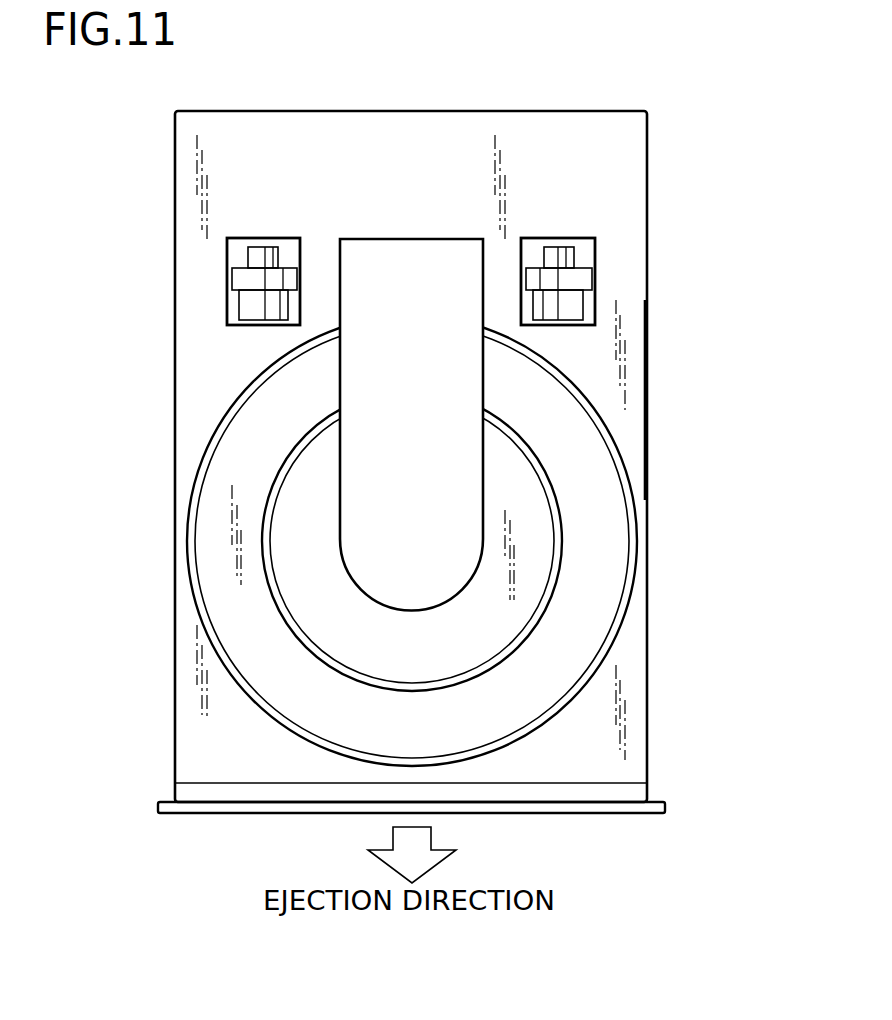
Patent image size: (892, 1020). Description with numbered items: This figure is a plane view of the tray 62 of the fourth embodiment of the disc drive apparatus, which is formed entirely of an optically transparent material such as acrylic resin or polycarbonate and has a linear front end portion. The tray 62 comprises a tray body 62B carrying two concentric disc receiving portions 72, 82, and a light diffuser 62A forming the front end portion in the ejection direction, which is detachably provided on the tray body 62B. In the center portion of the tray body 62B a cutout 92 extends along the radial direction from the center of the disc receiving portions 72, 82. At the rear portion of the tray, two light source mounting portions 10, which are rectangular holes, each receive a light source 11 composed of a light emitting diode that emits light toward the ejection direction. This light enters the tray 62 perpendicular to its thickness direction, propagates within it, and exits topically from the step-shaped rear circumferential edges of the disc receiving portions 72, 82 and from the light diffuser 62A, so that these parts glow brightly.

The light source mounting portion 10 is at (235, 254).
The light source 11 is at (240, 279).
The tray 62 is at (693, 339).
The light diffuser 62A is at (648, 792).
The tray body 62B is at (633, 408).
The disc receiving portion 72 is at (596, 592).
The disc receiving portion 82 is at (533, 537).
The cutout 92 is at (412, 252).